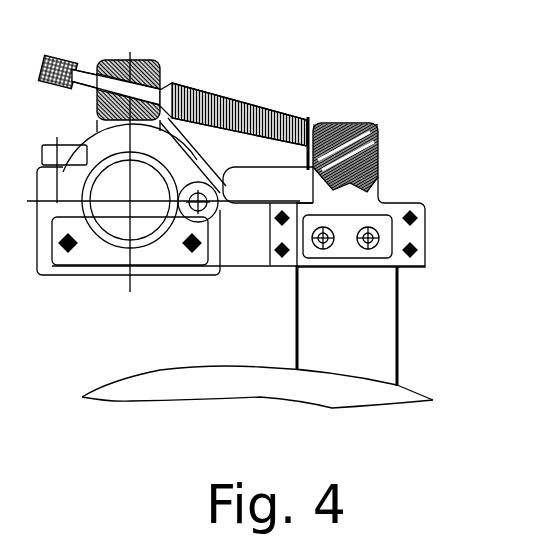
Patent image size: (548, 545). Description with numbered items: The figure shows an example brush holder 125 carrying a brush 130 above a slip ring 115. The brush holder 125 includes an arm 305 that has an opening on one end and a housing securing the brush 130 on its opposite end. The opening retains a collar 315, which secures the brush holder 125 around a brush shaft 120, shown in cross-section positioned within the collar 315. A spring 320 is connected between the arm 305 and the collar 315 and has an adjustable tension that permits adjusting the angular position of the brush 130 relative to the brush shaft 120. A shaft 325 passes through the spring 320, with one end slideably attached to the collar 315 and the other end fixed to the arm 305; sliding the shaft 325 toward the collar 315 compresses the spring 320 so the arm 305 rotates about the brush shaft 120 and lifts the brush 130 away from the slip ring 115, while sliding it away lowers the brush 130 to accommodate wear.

The slip ring 115 is at (163, 385).
The brush shaft 120 is at (110, 217).
The brush holder 125 is at (438, 200).
The brush 130 is at (375, 340).
The arm 305 is at (242, 252).
The collar 315 is at (218, 173).
The spring 320 is at (232, 100).
The shaft 325 is at (87, 68).